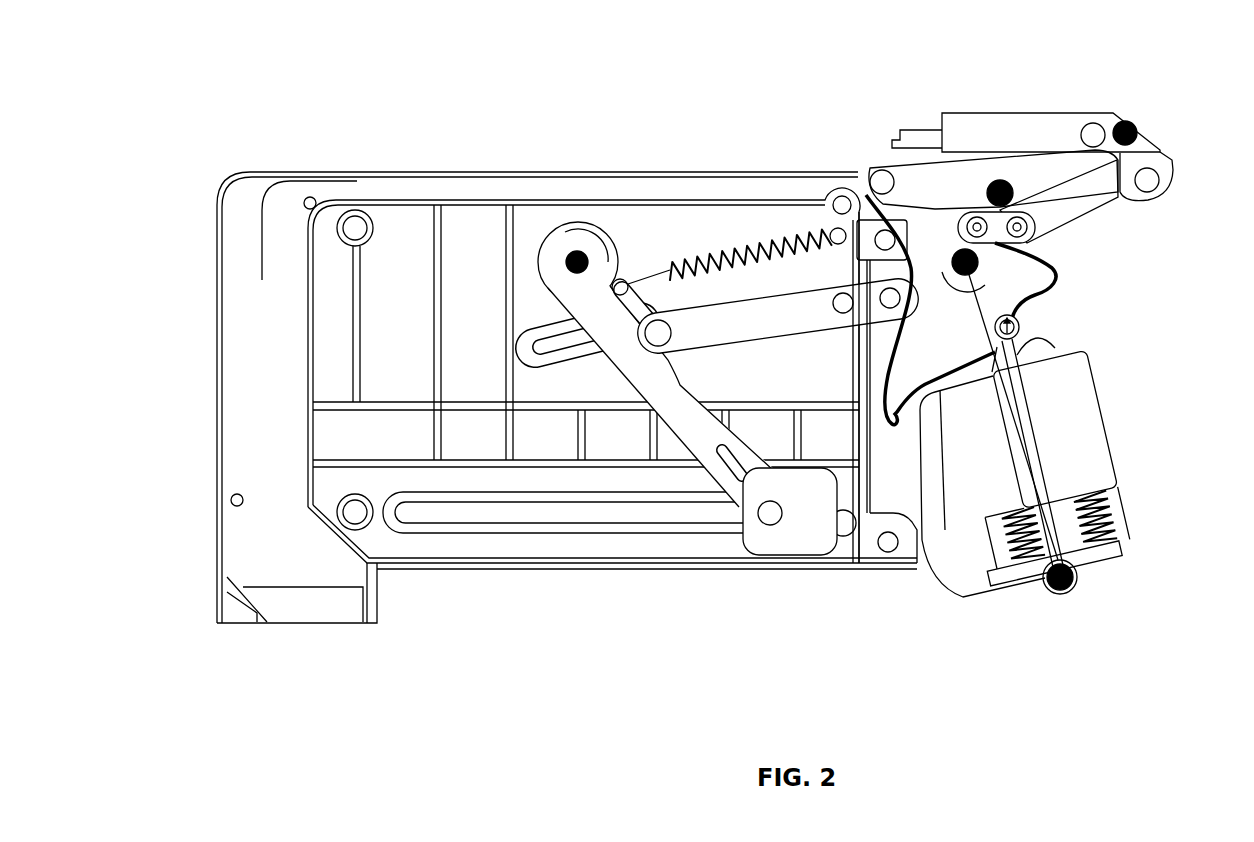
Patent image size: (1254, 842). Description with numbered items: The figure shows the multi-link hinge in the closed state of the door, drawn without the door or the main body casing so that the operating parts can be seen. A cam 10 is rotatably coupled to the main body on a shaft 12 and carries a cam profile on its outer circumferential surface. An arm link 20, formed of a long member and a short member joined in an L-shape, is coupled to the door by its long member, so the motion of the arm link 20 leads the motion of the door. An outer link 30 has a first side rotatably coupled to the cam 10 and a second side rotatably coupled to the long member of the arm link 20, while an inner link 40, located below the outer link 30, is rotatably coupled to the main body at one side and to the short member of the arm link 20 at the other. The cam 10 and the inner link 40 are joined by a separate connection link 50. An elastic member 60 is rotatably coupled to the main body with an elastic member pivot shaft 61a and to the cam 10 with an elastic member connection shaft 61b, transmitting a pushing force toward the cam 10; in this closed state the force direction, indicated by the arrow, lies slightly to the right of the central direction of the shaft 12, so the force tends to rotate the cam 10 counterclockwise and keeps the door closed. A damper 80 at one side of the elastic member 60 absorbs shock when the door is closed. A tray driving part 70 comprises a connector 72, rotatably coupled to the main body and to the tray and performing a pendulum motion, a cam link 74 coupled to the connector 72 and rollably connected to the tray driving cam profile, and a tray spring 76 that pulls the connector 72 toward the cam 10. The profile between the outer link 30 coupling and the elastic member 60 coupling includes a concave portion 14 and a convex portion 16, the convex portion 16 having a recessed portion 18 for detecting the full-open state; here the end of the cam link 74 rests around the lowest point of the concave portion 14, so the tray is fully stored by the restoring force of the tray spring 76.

The cam 10 is at (1062, 284).
The shaft 12 is at (1020, 335).
The concave portion 14 is at (857, 218).
The convex portion 16 is at (845, 410).
The recessed portion 18 is at (917, 535).
The arm link 20 is at (1067, 127).
The outer link 30 is at (933, 177).
The inner link 40 is at (1057, 220).
The connection link 50 is at (1027, 252).
The elastic member 60 is at (1131, 455).
The elastic member pivot shaft 61a is at (1072, 588).
The elastic member connection shaft 61b is at (1020, 328).
The tray driving part 70 is at (726, 271).
The connector 72 is at (545, 245).
The cam link 74 is at (733, 303).
The tray spring 76 is at (729, 199).
The damper 80 is at (952, 490).